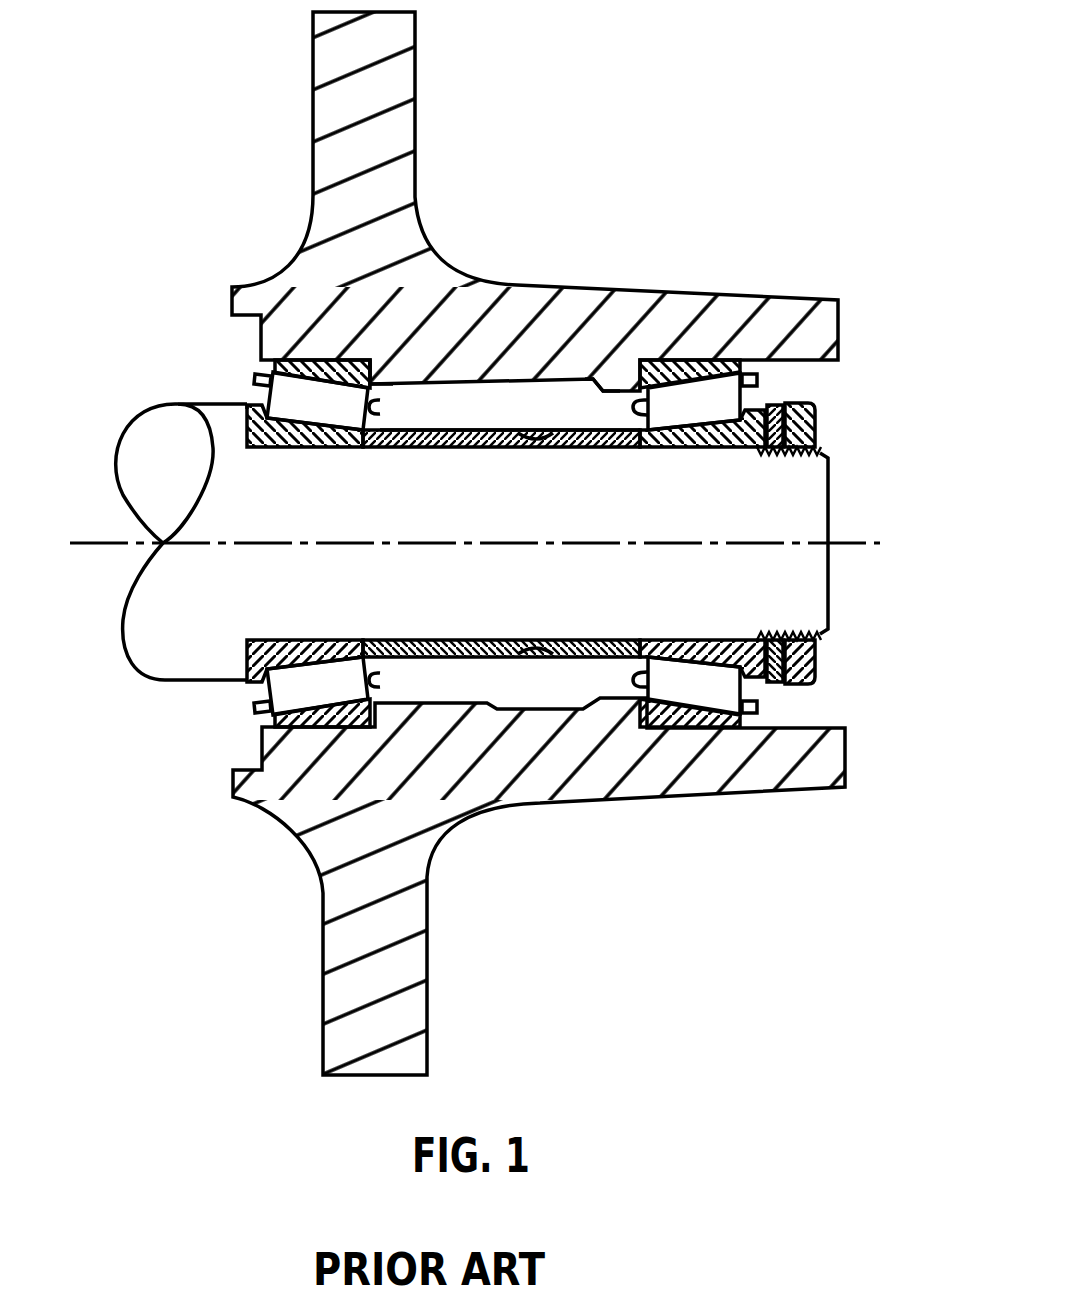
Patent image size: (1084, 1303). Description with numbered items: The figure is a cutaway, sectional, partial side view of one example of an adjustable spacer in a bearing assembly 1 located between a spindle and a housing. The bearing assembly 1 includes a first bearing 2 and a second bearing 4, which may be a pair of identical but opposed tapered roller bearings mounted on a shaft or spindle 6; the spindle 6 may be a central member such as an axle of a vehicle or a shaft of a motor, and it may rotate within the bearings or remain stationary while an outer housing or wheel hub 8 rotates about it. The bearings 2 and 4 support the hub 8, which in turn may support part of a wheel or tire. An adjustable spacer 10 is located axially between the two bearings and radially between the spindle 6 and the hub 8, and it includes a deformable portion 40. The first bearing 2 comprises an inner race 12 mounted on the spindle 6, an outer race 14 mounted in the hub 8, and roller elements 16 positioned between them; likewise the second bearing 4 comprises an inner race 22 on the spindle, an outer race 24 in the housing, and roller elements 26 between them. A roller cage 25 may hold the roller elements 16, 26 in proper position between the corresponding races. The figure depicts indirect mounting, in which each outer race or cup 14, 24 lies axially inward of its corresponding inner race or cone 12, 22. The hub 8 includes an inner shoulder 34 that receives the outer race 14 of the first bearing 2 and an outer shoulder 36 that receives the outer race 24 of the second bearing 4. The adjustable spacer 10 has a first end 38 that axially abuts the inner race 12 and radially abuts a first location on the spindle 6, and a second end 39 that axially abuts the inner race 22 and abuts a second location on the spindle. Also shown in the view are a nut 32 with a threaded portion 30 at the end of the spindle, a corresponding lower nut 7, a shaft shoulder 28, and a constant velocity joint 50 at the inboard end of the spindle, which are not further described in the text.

The bearing assembly 1 is at (703, 120).
The first bearing 2 is at (213, 350).
The second bearing 4 is at (822, 373).
The spindle 6 is at (808, 512).
The lower nut 7 is at (800, 688).
The hub 8 is at (513, 307).
The adjustable spacer 10 is at (491, 429).
The inner race 12 is at (272, 445).
The outer race 14 is at (343, 360).
The roller elements 16 is at (342, 414).
The inner race 22 is at (745, 440).
The outer race 24 is at (676, 357).
The roller cage 25 is at (381, 407).
The roller elements 26 is at (692, 413).
The shaft shoulder 28 is at (226, 418).
The threaded portion 30 is at (822, 448).
The nut 32 is at (816, 412).
The inner shoulder 34 is at (393, 367).
The outer shoulder 36 is at (623, 363).
The first end 38 is at (410, 440).
The second end 39 is at (637, 418).
The deformable portion 40 is at (540, 429).
The constant velocity joint 50 is at (92, 543).